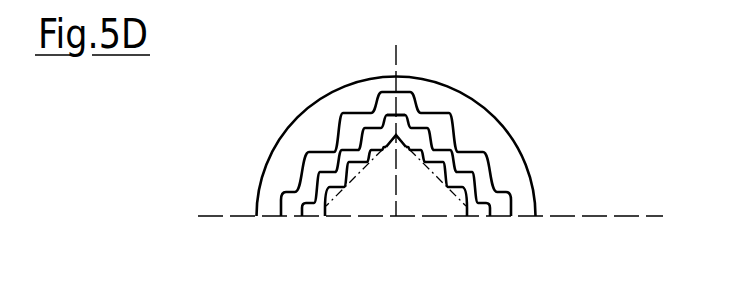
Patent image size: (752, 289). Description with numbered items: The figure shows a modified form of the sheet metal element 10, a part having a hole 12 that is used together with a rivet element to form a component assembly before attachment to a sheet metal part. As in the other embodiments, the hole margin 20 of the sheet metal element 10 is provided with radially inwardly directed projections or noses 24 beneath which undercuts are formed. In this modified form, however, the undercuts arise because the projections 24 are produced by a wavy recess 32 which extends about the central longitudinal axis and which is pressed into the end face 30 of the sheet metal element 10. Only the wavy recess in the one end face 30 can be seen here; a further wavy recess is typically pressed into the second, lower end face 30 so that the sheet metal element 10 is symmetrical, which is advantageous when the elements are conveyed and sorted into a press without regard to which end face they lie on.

The sheet metal element 10 is at (492, 135).
The hole 12 is at (428, 200).
The hole margin 20 is at (428, 152).
The projection 24 is at (470, 200).
The end face 30 is at (292, 153).
The wavy recess 32 is at (398, 113).